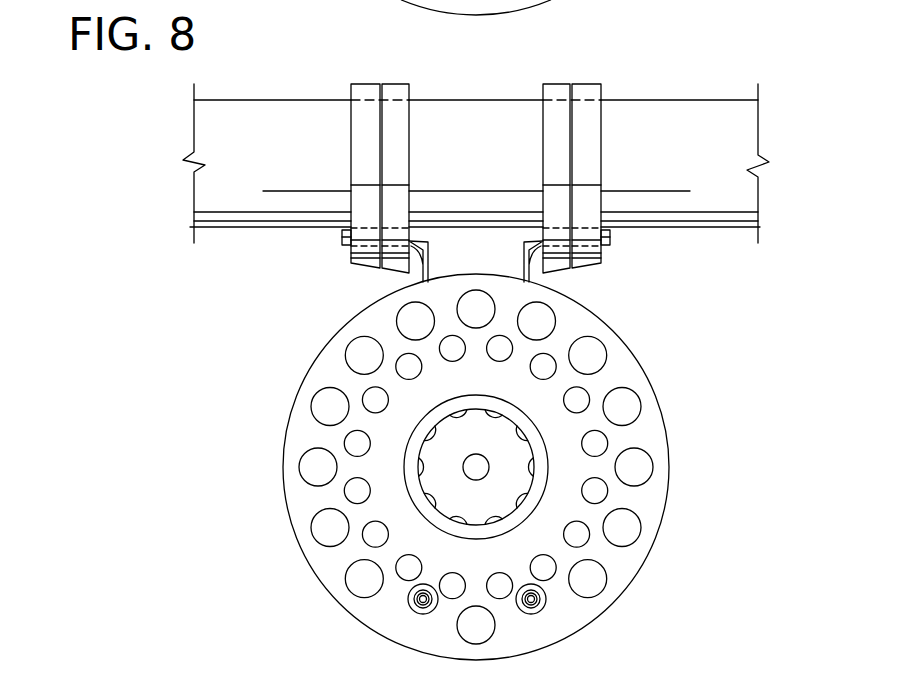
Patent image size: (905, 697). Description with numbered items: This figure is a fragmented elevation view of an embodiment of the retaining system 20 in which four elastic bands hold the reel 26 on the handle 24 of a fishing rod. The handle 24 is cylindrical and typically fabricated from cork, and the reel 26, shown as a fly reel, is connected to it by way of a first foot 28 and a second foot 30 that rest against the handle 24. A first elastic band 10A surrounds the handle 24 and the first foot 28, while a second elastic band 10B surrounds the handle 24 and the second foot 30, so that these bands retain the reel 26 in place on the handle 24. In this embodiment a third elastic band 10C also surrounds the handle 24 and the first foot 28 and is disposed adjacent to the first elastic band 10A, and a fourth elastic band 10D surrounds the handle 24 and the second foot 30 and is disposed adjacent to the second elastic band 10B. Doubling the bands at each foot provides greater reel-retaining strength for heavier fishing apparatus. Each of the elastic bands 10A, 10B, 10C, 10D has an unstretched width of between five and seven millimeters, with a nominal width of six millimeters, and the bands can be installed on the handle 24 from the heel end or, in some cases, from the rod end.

The retaining system 20 is at (742, 62).
The handle 24 is at (670, 100).
The first elastic band 10A is at (407, 85).
The second elastic band 10B is at (546, 83).
The third elastic band 10C is at (353, 83).
The fourth elastic band 10D is at (590, 85).
The reel 26 is at (668, 480).
The first foot 28 is at (345, 246).
The second foot 30 is at (607, 250).